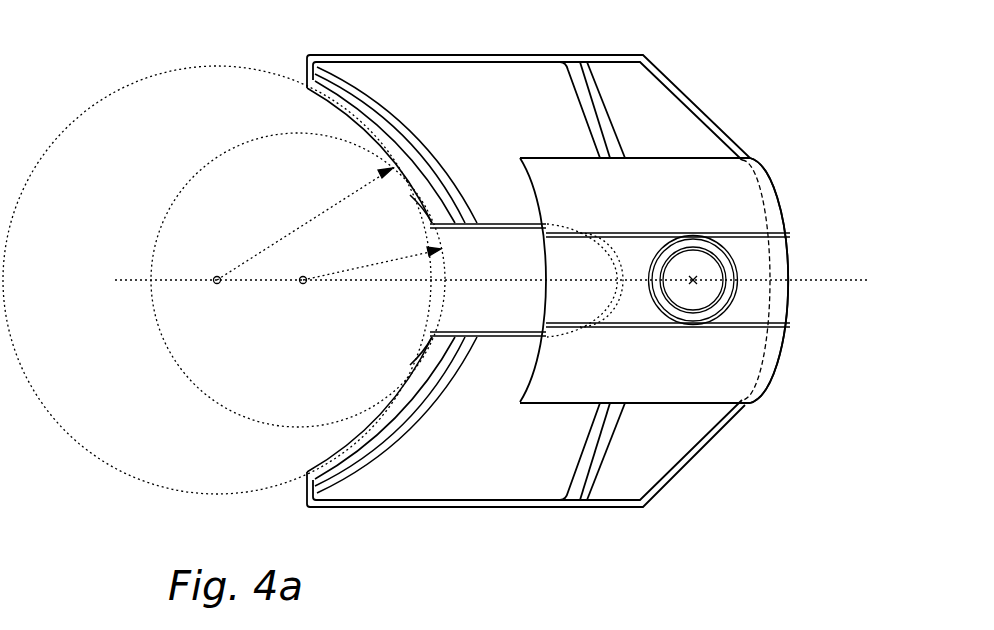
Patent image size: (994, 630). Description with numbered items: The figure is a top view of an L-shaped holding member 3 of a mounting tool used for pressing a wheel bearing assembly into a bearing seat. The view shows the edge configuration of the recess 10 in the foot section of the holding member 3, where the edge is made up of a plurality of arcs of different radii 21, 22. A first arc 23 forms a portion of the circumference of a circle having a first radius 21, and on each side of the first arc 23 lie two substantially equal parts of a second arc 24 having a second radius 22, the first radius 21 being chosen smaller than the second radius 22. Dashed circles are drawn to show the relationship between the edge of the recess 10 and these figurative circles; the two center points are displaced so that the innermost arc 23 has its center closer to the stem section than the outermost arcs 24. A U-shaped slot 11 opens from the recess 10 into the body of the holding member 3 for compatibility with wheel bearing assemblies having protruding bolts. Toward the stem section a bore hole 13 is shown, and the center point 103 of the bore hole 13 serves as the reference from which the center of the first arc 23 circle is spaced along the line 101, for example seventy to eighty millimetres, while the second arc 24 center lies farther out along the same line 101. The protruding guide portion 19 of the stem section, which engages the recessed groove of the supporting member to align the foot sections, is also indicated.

The L-shaped holding member 3 is at (710, 69).
The recess 10 is at (142, 102).
The U-shaped slot 11 is at (503, 263).
The bore hole 13 is at (695, 279).
The protruding guide portion 19 is at (745, 307).
The first radius 21 is at (344, 272).
The second radius 22 is at (268, 247).
The first arc 23 is at (421, 211).
The second arc 24 is at (360, 123).
The line 101 is at (126, 283).
The center point of the bore hole 103 is at (693, 283).